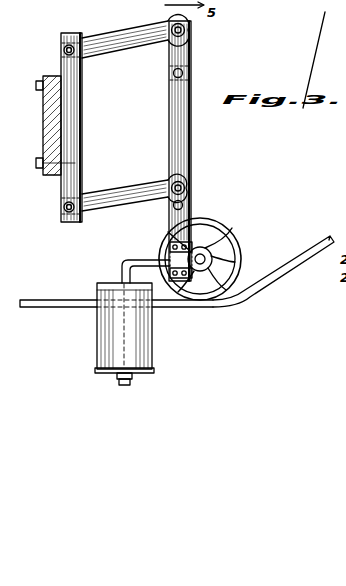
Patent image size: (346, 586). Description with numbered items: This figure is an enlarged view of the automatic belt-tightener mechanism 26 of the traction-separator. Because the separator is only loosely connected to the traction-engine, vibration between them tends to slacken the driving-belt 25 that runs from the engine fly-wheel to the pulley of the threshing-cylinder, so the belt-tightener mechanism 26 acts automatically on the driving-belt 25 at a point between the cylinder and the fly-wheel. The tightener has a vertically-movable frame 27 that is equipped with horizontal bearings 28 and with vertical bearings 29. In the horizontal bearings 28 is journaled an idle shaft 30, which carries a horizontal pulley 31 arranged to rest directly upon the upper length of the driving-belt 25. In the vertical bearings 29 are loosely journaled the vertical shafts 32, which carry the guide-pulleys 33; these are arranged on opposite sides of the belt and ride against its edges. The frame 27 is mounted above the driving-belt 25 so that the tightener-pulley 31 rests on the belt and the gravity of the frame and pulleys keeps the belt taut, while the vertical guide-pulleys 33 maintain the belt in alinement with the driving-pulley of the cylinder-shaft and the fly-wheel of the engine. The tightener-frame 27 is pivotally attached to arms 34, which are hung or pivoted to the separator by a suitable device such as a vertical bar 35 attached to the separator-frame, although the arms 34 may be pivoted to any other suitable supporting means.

The driving-belt 25 is at (193, 306).
The belt-tightener mechanism 26 is at (97, 127).
The vertically-movable frame 27 is at (186, 172).
The horizontal bearings 28 is at (196, 250).
The vertical bearings 29 is at (123, 280).
The idle shaft 30 is at (210, 252).
The horizontal pulley 31 is at (239, 259).
The vertical shafts 32 is at (132, 382).
The guide-pulleys 33 is at (135, 347).
The arms 34 is at (147, 40).
The vertical bar 35 is at (72, 98).